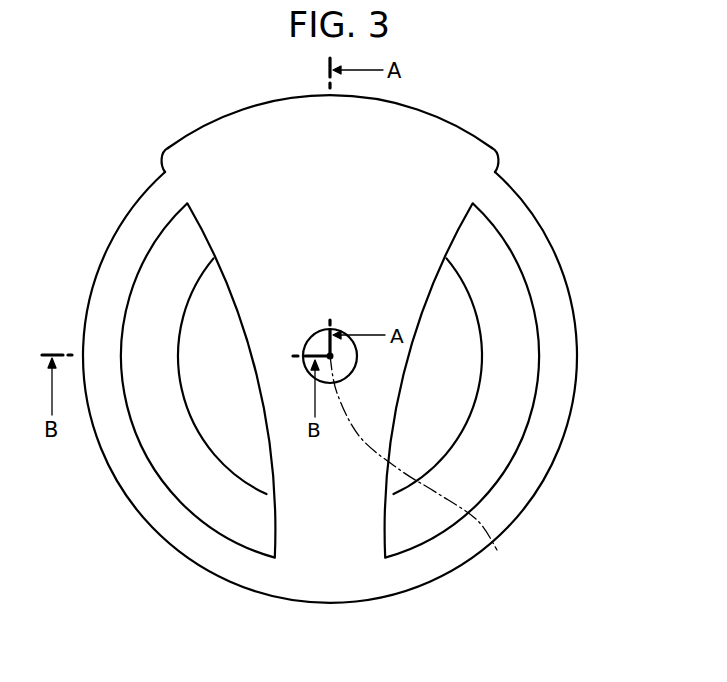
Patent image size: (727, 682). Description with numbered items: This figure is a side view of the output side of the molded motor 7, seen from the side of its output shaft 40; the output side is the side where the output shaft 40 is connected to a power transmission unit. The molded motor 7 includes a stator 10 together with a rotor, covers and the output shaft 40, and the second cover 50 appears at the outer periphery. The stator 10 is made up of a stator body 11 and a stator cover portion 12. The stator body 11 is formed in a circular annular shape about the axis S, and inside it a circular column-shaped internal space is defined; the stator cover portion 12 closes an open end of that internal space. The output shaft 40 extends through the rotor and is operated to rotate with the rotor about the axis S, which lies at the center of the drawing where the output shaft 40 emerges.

The molded motor 7 is at (527, 113).
The stator 10 is at (396, 380).
The stator body 11 is at (520, 313).
The stator cover portion 12 is at (470, 350).
The output shaft 40 is at (340, 365).
The second cover 50 is at (527, 234).
The axis S is at (418, 472).